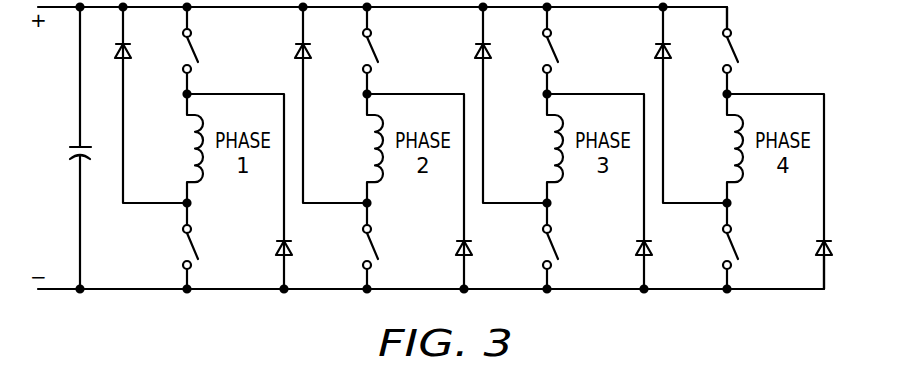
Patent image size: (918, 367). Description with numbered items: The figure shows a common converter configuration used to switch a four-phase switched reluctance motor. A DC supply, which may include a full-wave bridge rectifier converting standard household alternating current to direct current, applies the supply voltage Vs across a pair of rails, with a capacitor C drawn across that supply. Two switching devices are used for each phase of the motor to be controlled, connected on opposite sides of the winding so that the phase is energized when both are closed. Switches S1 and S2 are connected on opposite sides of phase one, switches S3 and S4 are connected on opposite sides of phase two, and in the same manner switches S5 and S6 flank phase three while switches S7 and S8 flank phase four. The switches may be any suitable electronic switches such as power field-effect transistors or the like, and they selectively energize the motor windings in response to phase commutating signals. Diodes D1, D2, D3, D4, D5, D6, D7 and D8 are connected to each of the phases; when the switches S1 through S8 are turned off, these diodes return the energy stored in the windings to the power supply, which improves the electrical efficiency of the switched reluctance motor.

The DC link capacitor C is at (89, 148).
The supply voltage Vs is at (38, 149).
The diode D1 is at (151, 104).
The diode D2 is at (255, 193).
The diode D3 is at (331, 104).
The diode D4 is at (435, 193).
The diode D5 is at (511, 104).
The diode D6 is at (615, 193).
The diode D7 is at (691, 104).
The diode D8 is at (795, 191).
The switch S1 is at (206, 49).
The switch S2 is at (206, 248).
The switch S3 is at (386, 49).
The switch S4 is at (386, 248).
The switch S5 is at (566, 49).
The switch S6 is at (566, 248).
The switch S7 is at (746, 50).
The switch S8 is at (746, 248).